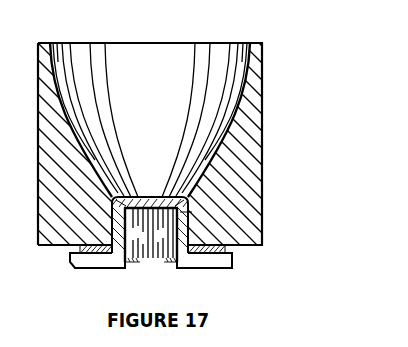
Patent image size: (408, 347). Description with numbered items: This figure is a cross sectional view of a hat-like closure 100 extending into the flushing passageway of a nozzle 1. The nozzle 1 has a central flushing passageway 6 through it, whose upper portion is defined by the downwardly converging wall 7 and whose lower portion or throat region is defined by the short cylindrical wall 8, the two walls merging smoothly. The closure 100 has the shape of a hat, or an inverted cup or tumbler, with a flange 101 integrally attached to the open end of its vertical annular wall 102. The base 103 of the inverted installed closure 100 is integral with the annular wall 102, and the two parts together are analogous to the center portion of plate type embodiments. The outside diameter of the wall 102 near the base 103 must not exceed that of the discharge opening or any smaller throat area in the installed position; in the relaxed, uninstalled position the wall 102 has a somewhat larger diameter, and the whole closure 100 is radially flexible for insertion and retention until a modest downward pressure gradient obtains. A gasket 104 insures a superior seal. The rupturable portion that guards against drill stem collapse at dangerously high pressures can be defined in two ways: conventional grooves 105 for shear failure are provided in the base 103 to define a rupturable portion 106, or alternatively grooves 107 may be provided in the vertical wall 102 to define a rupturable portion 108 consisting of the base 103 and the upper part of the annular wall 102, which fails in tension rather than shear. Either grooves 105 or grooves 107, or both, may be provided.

The nozzle 1 is at (247, 73).
The central flushing passageway 6 is at (152, 74).
The downwardly converging wall 7 is at (52, 73).
The short cylindrical wall 8 is at (107, 244).
The closure 100 is at (204, 169).
The flange 101 is at (233, 262).
The vertical annular wall 102 is at (110, 216).
The base 103 is at (178, 197).
The gasket 104 is at (73, 251).
The grooves 105 is at (128, 198).
The rupturable portion 106 is at (143, 196).
The grooves 107 is at (194, 229).
The rupturable portion 108 is at (194, 216).